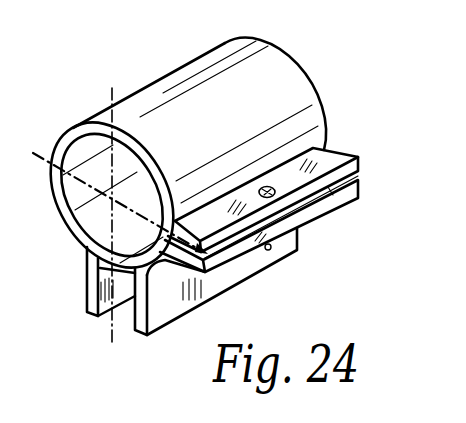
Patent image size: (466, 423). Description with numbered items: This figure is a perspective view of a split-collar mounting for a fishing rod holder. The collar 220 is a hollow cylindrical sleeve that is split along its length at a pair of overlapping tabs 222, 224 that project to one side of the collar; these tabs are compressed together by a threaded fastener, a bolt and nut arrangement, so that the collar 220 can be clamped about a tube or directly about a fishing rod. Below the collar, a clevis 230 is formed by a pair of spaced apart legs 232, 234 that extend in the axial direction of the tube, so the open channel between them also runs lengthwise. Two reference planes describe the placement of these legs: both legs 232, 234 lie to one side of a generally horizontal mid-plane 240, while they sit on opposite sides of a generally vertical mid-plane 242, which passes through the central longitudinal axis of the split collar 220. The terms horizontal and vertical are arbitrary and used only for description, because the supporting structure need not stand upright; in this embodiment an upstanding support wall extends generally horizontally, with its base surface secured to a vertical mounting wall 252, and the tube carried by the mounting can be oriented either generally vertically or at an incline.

The collar 220 is at (188, 88).
The overlapping tab 222 is at (313, 157).
The overlapping tab 224 is at (307, 222).
The clevis 230 is at (80, 266).
The leg 232 is at (105, 316).
The leg 234 is at (151, 334).
The horizontal mid-plane 240 is at (38, 142).
The vertical mid-plane 242 is at (104, 96).
The vertical mounting wall 252 is at (104, 203).